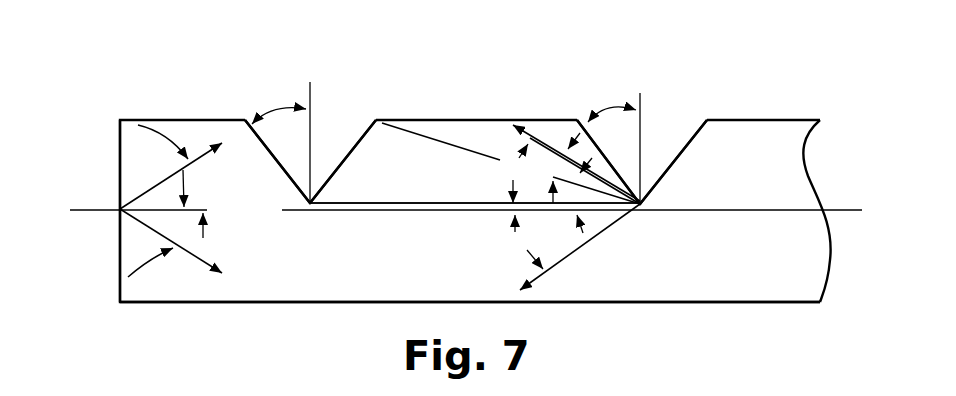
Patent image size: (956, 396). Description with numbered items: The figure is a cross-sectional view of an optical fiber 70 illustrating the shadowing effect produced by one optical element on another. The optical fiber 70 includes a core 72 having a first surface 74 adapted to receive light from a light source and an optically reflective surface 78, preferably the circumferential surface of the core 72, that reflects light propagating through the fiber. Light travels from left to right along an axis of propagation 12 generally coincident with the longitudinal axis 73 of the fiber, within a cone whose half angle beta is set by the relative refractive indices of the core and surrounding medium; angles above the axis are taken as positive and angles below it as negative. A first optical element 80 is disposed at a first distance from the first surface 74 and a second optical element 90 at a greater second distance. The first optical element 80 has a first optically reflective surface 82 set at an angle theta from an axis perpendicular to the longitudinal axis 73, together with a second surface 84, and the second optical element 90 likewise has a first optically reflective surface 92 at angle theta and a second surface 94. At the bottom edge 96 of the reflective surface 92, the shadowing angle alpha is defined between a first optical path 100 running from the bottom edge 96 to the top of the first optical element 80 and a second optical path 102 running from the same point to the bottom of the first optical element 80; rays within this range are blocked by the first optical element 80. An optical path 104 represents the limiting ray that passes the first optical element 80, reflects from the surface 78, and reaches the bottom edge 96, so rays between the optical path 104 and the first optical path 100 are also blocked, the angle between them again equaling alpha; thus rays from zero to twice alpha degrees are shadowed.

The axis of propagation 12 is at (393, 213).
The optical fiber 70 is at (148, 97).
The core 72 is at (247, 285).
The longitudinal axis 73 is at (230, 210).
The first surface 74 is at (120, 148).
The optically reflective surface 78 is at (292, 303).
The first optical element 80 is at (330, 102).
The first optically reflective surface 82 is at (247, 120).
The second surface 84 is at (366, 132).
The second optical element 90 is at (663, 92).
The first optically reflective surface 92 is at (581, 121).
The second surface 94 is at (695, 133).
The bottom edge 96 is at (645, 210).
The first optical path 100 is at (424, 136).
The second optical path 102 is at (453, 203).
The optical path 104 is at (495, 130).